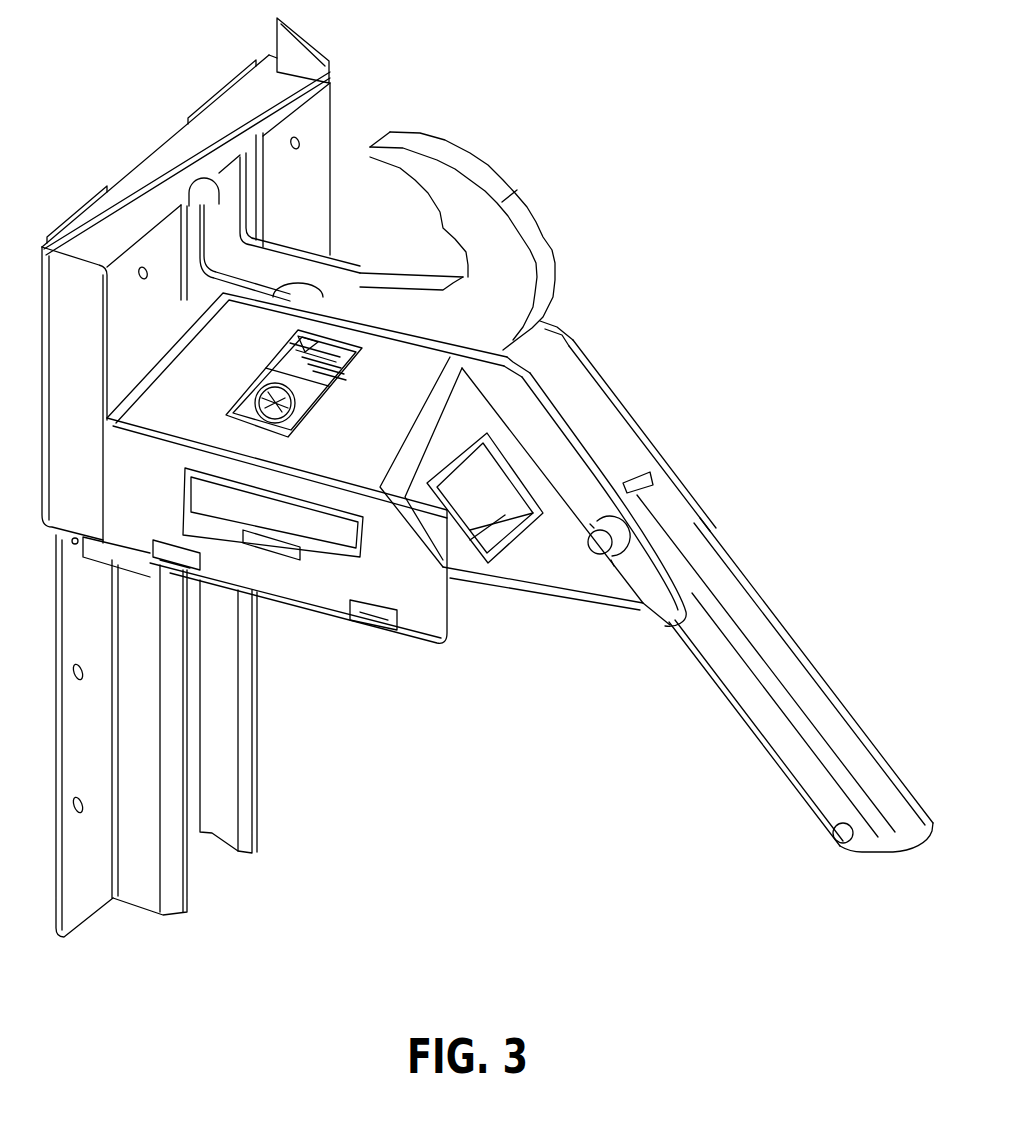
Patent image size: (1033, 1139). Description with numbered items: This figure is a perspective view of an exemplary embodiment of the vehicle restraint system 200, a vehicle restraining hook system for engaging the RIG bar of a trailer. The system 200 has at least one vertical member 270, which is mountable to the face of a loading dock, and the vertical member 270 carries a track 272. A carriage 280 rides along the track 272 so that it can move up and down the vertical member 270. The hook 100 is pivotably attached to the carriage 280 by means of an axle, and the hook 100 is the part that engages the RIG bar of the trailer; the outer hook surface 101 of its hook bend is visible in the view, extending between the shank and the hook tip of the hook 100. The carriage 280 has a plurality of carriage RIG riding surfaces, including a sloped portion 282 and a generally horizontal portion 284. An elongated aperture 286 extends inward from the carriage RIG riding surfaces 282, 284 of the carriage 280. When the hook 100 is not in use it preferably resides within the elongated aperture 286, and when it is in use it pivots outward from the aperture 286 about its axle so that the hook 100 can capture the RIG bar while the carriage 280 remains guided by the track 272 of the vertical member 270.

The vehicle restraint system 200 is at (626, 107).
The hook 100 is at (418, 128).
The outer hook surface 101 is at (523, 220).
The carriage 280 is at (147, 500).
The generally horizontal portion 284 is at (556, 326).
The elongated aperture 286 is at (560, 371).
The sloped portion 282 is at (647, 433).
The vertical member 270 is at (80, 750).
The track 272 is at (212, 803).